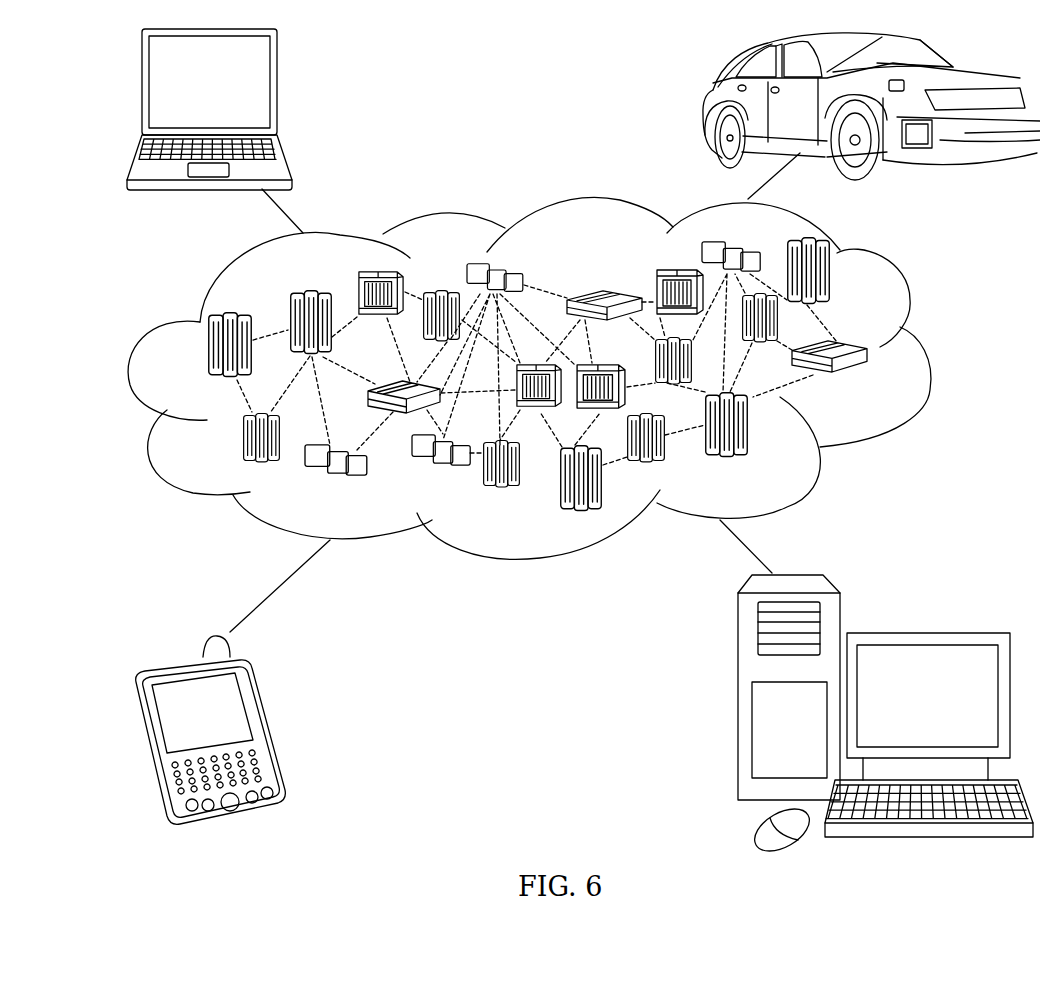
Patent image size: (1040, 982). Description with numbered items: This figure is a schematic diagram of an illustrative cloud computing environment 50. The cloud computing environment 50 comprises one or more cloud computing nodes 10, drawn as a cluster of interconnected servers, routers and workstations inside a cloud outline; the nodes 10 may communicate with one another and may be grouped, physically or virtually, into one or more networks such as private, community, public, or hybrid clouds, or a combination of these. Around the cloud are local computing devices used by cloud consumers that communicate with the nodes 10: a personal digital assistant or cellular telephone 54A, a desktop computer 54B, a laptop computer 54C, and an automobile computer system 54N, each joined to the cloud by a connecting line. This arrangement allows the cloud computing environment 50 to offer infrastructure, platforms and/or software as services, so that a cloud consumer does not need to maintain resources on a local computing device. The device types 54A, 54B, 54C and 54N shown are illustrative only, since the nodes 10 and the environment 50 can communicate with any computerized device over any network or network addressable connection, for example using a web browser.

The laptop computer 54C is at (278, 91).
The automobile computer system 54N is at (713, 108).
The personal digital assistant (PDA) or cellular telephone 54A is at (267, 725).
The desktop computer 54B is at (925, 632).
The cloud computing environment 50 is at (928, 353).
The cloud computing node 10 is at (868, 383).